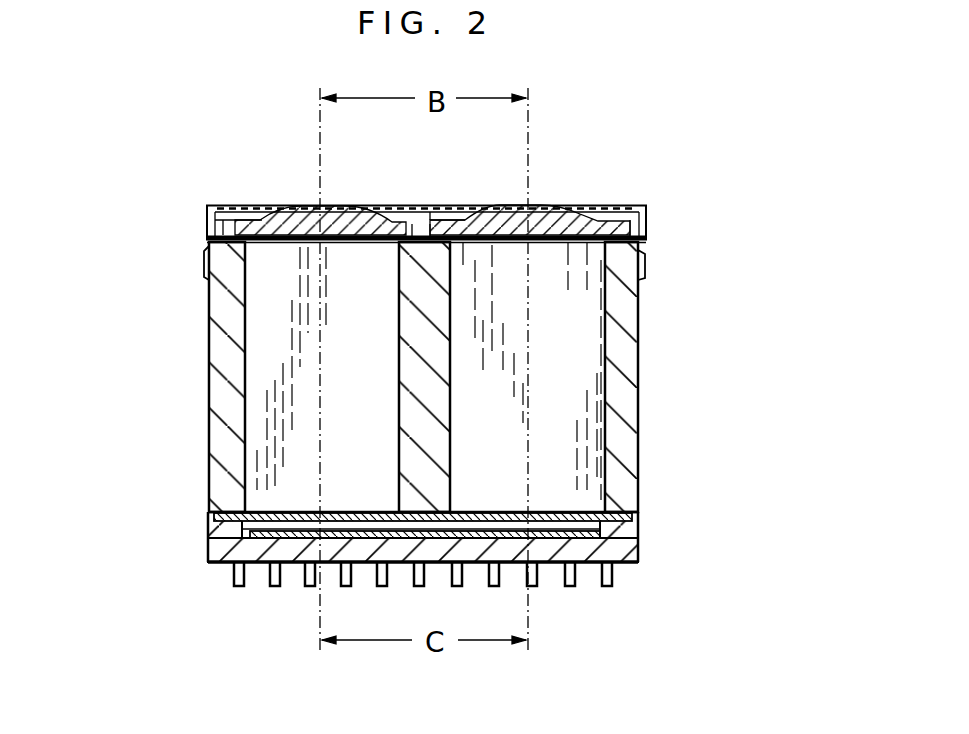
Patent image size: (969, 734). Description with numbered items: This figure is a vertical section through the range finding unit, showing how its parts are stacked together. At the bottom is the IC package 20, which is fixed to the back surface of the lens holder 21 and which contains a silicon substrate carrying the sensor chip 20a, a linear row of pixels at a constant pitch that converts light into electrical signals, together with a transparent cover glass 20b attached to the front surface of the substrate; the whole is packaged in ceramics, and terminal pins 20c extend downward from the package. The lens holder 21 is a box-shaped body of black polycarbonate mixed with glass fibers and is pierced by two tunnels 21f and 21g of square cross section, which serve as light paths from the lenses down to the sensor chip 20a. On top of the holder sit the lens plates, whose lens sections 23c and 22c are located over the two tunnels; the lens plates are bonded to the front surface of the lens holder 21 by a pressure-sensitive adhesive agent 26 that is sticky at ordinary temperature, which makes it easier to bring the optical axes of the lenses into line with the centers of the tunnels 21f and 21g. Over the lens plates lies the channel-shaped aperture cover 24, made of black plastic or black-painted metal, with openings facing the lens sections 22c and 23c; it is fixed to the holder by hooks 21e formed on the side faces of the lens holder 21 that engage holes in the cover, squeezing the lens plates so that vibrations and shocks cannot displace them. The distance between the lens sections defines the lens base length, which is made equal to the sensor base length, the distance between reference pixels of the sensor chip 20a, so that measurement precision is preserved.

The IC package 20 is at (379, 549).
The sensor chip 20a is at (468, 540).
The cover glass 20b is at (582, 532).
The terminal pins 20c is at (573, 590).
The lens holder 21 is at (444, 375).
The hooks 21e is at (205, 258).
The tunnel 21f is at (583, 385).
The tunnel 21g is at (262, 403).
The lens section 22c is at (548, 208).
The lens section 23c is at (337, 208).
The aperture cover 24 is at (233, 205).
The pressure-sensitive adhesive agent 26 is at (428, 244).